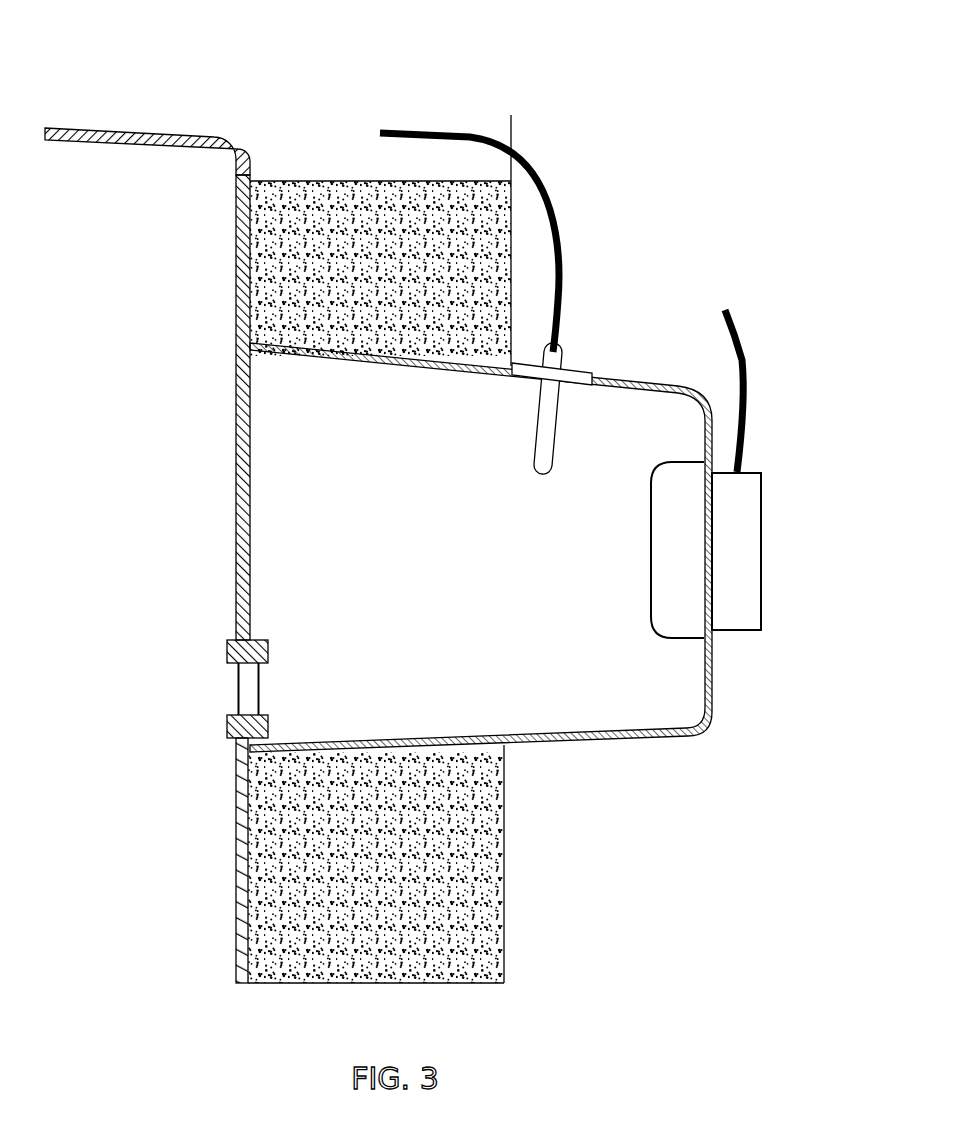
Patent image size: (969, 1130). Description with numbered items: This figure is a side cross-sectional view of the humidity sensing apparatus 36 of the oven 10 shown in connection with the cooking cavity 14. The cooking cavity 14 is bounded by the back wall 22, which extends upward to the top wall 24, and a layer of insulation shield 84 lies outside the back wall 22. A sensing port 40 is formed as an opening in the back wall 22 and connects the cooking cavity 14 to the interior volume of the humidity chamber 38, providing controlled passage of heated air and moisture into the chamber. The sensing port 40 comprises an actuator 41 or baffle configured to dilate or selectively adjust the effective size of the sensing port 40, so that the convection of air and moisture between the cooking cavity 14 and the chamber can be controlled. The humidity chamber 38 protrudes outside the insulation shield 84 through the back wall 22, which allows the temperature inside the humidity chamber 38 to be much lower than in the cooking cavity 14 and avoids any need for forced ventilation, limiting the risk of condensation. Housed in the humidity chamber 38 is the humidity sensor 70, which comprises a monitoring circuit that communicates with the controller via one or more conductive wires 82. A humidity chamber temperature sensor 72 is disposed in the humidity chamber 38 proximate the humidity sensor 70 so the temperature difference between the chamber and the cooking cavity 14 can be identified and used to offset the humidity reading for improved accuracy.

The oven 10 is at (263, 55).
The cooking cavity 14 is at (101, 474).
The back wall 22 is at (235, 883).
The top wall 24 is at (118, 130).
The humidity sensing apparatus 36 is at (553, 442).
The humidity chamber 38 is at (443, 591).
The sensing port 40 is at (272, 684).
The actuator 41 is at (228, 650).
The humidity sensor 70 is at (755, 558).
The humidity chamber temperature sensor 72 is at (542, 433).
The conductive wires 82 is at (552, 200).
The insulation shield 84 is at (365, 283).